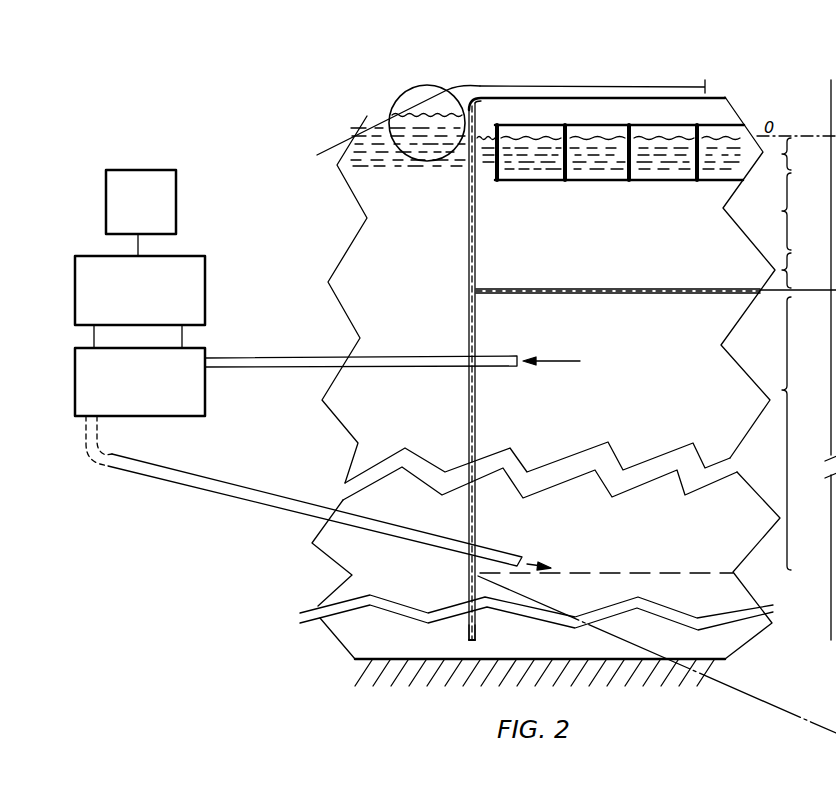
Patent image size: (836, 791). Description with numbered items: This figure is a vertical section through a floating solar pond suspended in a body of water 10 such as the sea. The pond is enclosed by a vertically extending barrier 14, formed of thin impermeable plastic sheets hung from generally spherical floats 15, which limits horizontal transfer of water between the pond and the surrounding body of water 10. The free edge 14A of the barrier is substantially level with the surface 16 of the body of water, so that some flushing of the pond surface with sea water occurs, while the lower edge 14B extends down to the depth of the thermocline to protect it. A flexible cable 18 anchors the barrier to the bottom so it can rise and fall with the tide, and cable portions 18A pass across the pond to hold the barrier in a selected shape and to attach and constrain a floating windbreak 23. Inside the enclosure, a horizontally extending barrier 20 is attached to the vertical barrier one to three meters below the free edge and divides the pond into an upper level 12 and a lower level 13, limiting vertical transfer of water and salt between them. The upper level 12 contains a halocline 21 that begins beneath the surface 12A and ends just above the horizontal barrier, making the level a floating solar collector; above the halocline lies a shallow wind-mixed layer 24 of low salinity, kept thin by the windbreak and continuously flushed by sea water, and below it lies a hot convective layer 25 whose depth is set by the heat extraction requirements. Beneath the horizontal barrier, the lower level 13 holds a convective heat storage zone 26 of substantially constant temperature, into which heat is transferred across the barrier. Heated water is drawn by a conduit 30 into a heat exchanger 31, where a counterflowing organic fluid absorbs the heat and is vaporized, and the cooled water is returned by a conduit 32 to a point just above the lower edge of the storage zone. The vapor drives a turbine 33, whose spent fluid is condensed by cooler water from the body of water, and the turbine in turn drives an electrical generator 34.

The body of water 10 is at (368, 92).
The upper level 12 is at (492, 249).
The surface of upper level 12A is at (675, 137).
The lower level 13 is at (704, 528).
The vertical barrier 14 is at (467, 297).
The free edge of vertical barrier 14A is at (508, 97).
The lower edge of vertical barrier 14B is at (477, 633).
The floats 15 is at (417, 85).
The surface of body of water 16 is at (438, 113).
The flexible cable 18 is at (335, 140).
The cable portions 18A is at (610, 86).
The horizontal barrier 20 is at (628, 288).
The halocline 21 is at (802, 211).
The floating windbreak 23 is at (725, 128).
The wind-mixed layer 24 is at (801, 154).
The convective layer 25 is at (803, 270).
The convective heat storage zone 26 is at (803, 433).
The conduit 30 is at (500, 367).
The heat exchanger 31 is at (207, 382).
The conduit 32 is at (235, 492).
The turbine 33 is at (207, 285).
The electrical generator 34 is at (148, 167).